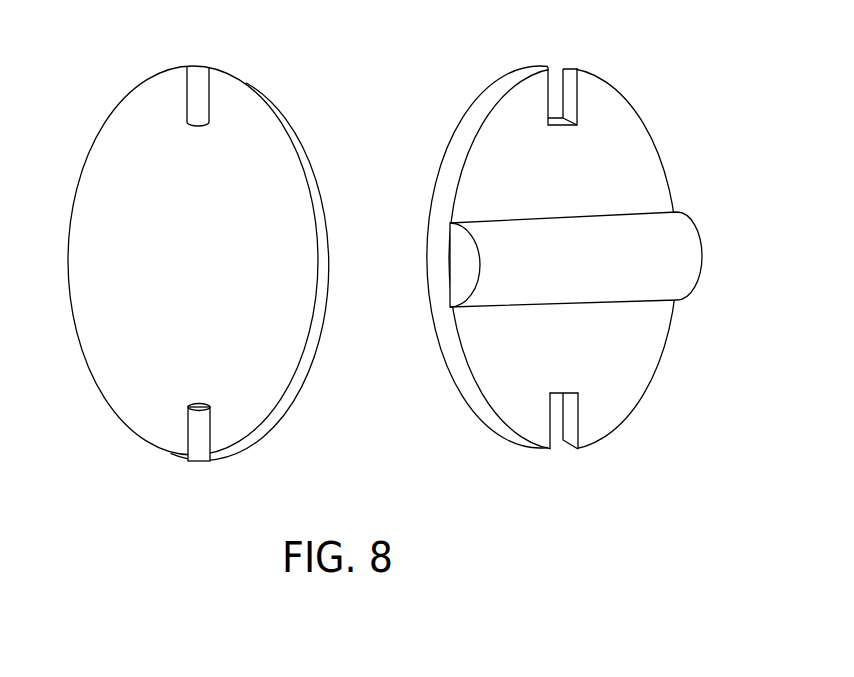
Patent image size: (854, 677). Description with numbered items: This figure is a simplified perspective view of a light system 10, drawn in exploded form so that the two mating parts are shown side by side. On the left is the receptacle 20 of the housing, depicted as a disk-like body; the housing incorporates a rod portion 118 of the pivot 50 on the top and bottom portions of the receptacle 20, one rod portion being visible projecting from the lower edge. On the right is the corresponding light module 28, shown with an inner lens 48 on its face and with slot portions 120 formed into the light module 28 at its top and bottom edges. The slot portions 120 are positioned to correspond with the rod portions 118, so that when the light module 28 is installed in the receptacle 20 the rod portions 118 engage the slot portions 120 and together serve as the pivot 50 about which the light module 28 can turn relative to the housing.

The light system 10 is at (192, 253).
The receptacle 20 is at (296, 300).
The light module 28 is at (570, 254).
The inner lens 48 is at (648, 274).
The pivot 50 is at (202, 414).
The rod portion 118 is at (197, 430).
The slot portion 120 is at (558, 444).